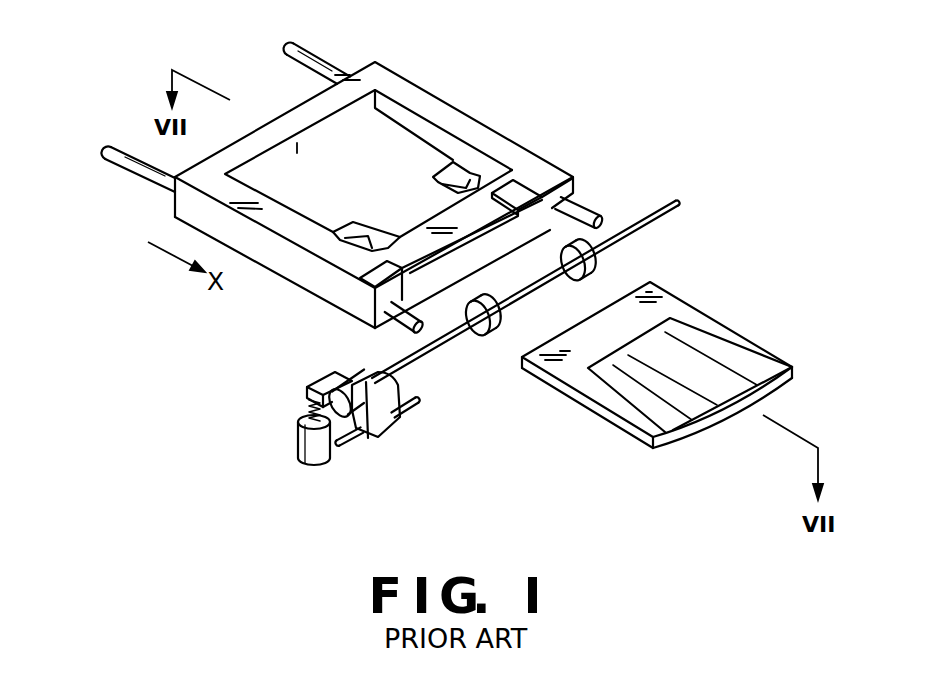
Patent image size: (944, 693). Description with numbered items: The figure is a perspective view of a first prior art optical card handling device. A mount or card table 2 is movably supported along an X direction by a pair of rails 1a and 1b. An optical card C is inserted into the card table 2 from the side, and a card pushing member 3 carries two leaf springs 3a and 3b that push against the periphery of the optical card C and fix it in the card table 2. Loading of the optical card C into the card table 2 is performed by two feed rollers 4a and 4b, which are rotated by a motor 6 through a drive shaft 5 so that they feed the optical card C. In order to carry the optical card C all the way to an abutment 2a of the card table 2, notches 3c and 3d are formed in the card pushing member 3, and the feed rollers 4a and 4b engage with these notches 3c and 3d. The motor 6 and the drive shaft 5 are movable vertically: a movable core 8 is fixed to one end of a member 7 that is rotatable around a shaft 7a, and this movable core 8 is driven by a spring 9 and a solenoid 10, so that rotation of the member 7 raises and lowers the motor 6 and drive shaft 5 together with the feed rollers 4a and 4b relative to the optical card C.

The rail 1a is at (330, 83).
The rail 1b is at (127, 168).
The card table 2 is at (450, 100).
The abutment 2a is at (360, 79).
The card pushing member 3 is at (425, 224).
The leaf spring 3a is at (470, 172).
The leaf spring 3b is at (313, 260).
The notch 3c is at (543, 153).
The notch 3d is at (383, 267).
The feed roller 4a is at (594, 265).
The feed roller 4b is at (489, 337).
The drive shaft 5 is at (679, 203).
The motor 6 is at (387, 430).
The member 7 is at (367, 443).
The shaft 7a is at (413, 403).
The movable core 8 is at (310, 390).
The spring 9 is at (303, 418).
The solenoid 10 is at (302, 457).
The optical card C is at (748, 337).